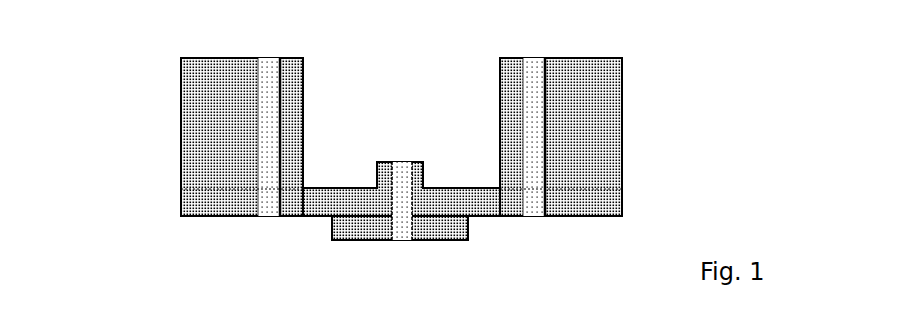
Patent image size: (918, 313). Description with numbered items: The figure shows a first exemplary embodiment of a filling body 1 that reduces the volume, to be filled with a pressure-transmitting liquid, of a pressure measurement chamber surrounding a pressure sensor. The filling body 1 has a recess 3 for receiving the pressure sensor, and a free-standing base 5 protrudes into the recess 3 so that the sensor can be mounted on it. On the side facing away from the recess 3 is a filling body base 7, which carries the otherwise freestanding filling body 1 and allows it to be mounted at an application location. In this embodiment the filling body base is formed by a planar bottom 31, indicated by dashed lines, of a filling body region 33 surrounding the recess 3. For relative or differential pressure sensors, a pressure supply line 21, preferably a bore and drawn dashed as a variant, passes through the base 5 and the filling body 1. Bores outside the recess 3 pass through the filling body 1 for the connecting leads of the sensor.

The filling body 1 is at (138, 62).
The recess 3 is at (407, 117).
The base 5 is at (423, 162).
The filling body base 7 is at (447, 230).
The pressure supply line 21 is at (398, 205).
The planar bottom 31 is at (476, 212).
The filling body region 33 is at (208, 125).